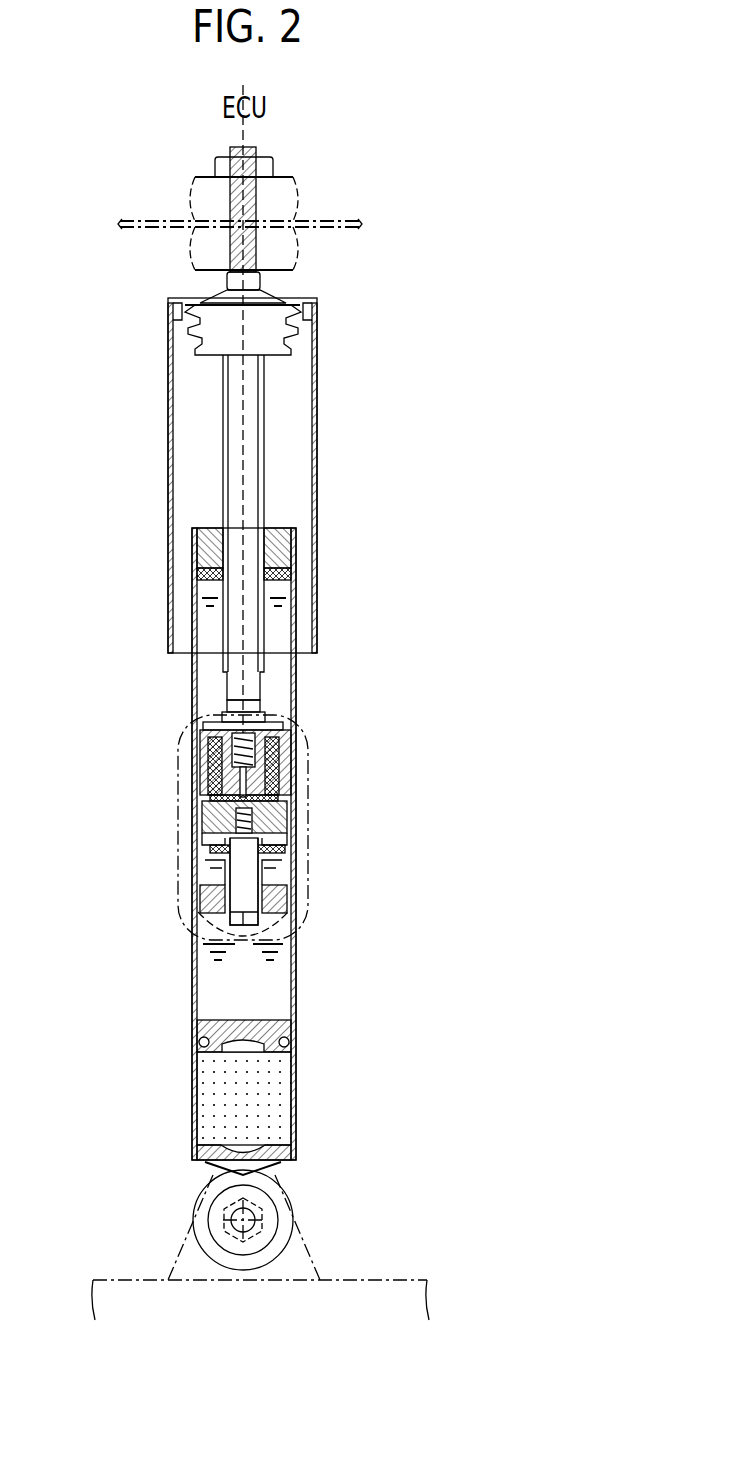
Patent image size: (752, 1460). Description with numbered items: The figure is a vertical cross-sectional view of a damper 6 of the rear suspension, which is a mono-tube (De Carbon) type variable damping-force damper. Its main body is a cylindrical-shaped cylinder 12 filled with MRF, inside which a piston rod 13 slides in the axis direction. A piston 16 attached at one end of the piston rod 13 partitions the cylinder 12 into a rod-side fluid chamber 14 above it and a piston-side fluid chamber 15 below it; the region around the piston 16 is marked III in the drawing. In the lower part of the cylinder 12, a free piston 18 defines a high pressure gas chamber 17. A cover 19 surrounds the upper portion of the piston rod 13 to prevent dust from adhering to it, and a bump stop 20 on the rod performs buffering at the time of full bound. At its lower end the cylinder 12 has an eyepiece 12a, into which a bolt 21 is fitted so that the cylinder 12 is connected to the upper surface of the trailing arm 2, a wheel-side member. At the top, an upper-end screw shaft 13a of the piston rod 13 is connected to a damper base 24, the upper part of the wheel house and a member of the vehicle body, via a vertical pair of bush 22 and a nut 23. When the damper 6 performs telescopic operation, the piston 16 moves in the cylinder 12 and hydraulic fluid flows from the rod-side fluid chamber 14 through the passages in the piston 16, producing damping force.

The damper 6 is at (76, 132).
The trailing arm 2 is at (350, 1288).
The cylinder 12 is at (196, 946).
The eyepiece 12a is at (200, 1210).
The piston rod 13 is at (230, 680).
The upper-end screw shaft 13a is at (229, 152).
The rod-side fluid chamber 14 is at (280, 690).
The piston-side fluid chamber 15 is at (280, 975).
The piston 16 is at (202, 832).
The high pressure gas chamber 17 is at (272, 1105).
The free piston 18 is at (197, 1030).
The cover 19 is at (170, 470).
The bump stop 20 is at (215, 342).
The bolt 21 is at (292, 1213).
The bush 22 is at (290, 199).
The nut 23 is at (268, 165).
The damper base 24 is at (148, 222).
The region shown in FIG. 3 III is at (312, 806).